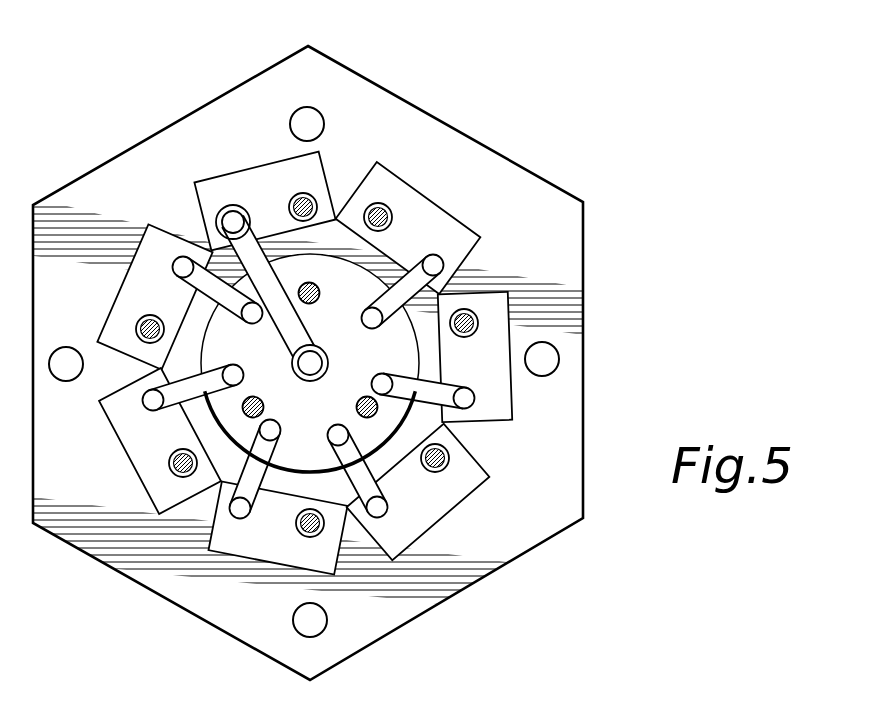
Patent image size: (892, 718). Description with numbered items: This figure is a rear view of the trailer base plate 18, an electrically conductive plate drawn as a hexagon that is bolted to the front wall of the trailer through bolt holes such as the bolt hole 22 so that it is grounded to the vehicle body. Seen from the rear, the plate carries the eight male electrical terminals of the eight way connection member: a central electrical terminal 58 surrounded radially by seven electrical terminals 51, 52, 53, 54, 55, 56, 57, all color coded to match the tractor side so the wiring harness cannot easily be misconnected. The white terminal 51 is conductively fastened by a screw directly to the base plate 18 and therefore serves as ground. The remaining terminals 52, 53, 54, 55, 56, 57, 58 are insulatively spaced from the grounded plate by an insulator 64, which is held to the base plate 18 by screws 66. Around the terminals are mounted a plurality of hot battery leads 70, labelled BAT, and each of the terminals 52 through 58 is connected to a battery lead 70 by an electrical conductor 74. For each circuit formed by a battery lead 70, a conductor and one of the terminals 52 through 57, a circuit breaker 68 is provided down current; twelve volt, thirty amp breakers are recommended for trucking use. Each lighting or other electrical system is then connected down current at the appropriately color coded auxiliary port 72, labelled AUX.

The trailer base plate 18 is at (510, 172).
The bolt hole 22 is at (290, 111).
The white terminal 51 is at (322, 294).
The electrical terminal 52 is at (259, 322).
The electrical terminal 53 is at (244, 375).
The electrical terminal 54 is at (280, 421).
The electrical terminal 55 is at (340, 425).
The electrical terminal 56 is at (372, 378).
The electrical terminal 57 is at (364, 318).
The central electrical terminal 58 is at (319, 347).
The insulator 64 is at (288, 462).
The screws 66 is at (246, 418).
The circuit breaker 68 is at (313, 345).
The hot battery lead 70 is at (245, 205).
The auxiliary port 72 is at (364, 211).
The electrical conductor 74 is at (258, 470).